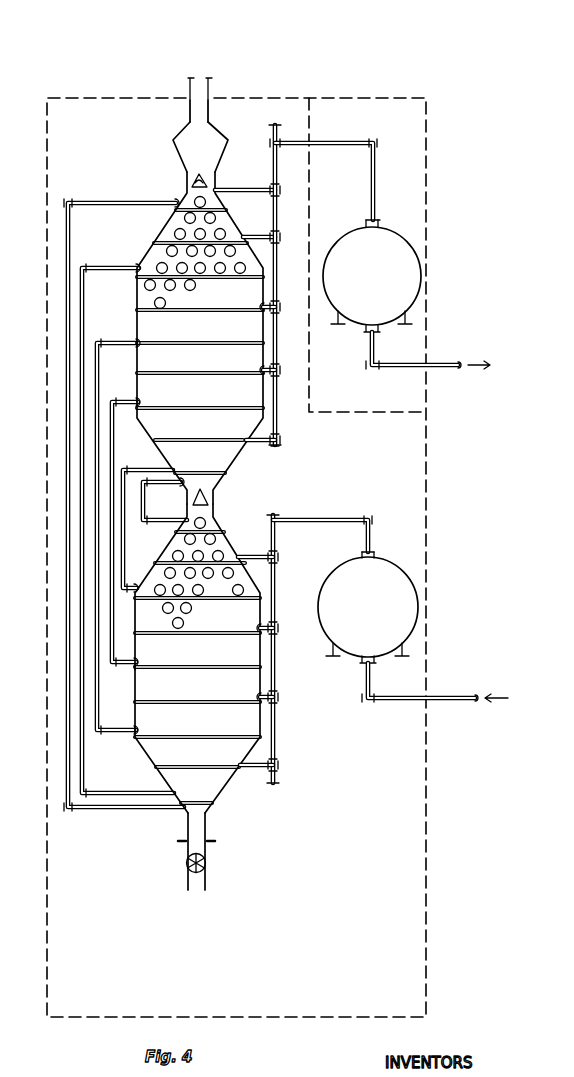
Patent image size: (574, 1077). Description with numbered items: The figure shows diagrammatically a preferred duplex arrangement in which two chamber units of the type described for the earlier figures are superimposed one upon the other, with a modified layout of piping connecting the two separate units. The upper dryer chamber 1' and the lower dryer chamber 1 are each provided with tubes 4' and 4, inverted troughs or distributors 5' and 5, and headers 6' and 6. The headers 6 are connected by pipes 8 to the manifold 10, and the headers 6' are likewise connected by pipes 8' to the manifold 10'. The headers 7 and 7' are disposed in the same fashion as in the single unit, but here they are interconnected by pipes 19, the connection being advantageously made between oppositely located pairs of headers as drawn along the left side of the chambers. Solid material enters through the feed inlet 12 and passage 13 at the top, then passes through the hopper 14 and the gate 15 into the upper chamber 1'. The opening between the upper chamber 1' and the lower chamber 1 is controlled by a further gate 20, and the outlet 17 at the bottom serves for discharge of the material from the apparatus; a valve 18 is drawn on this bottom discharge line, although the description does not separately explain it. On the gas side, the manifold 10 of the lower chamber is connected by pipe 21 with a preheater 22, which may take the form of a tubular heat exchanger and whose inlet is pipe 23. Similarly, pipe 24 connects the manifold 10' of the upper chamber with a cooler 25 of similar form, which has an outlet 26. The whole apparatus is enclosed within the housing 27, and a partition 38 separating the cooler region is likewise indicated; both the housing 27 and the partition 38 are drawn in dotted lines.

The dryer chamber 1 is at (214, 645).
The dryer chamber 1' is at (216, 338).
The tubes 4 is at (192, 557).
The tubes 4' is at (183, 235).
The inverted troughs or distributors 5 is at (137, 613).
The inverted troughs or distributors 5' is at (150, 299).
The headers 6 is at (280, 596).
The headers 6' is at (281, 311).
The headers 7 is at (118, 698).
The headers 7' is at (119, 372).
The pipes 8 is at (279, 666).
The pipes 8' is at (258, 214).
The manifold 10 is at (270, 649).
The manifold 10' is at (274, 285).
The feed inlet 12 is at (211, 82).
The passage 13 is at (208, 110).
The hopper 14 is at (173, 149).
The gate 15 is at (206, 181).
The outlet 17 is at (207, 850).
The outlet valve 18 is at (187, 871).
The pipes 19 is at (143, 498).
The gate 20 is at (211, 499).
The pipe 21 is at (312, 521).
The preheater 22 is at (405, 597).
The pipe 23 is at (380, 702).
The pipe 24 is at (345, 143).
The cooler 25 is at (412, 264).
The outlet 26 is at (388, 370).
The housing 27 is at (47, 923).
The partition 38 is at (316, 120).